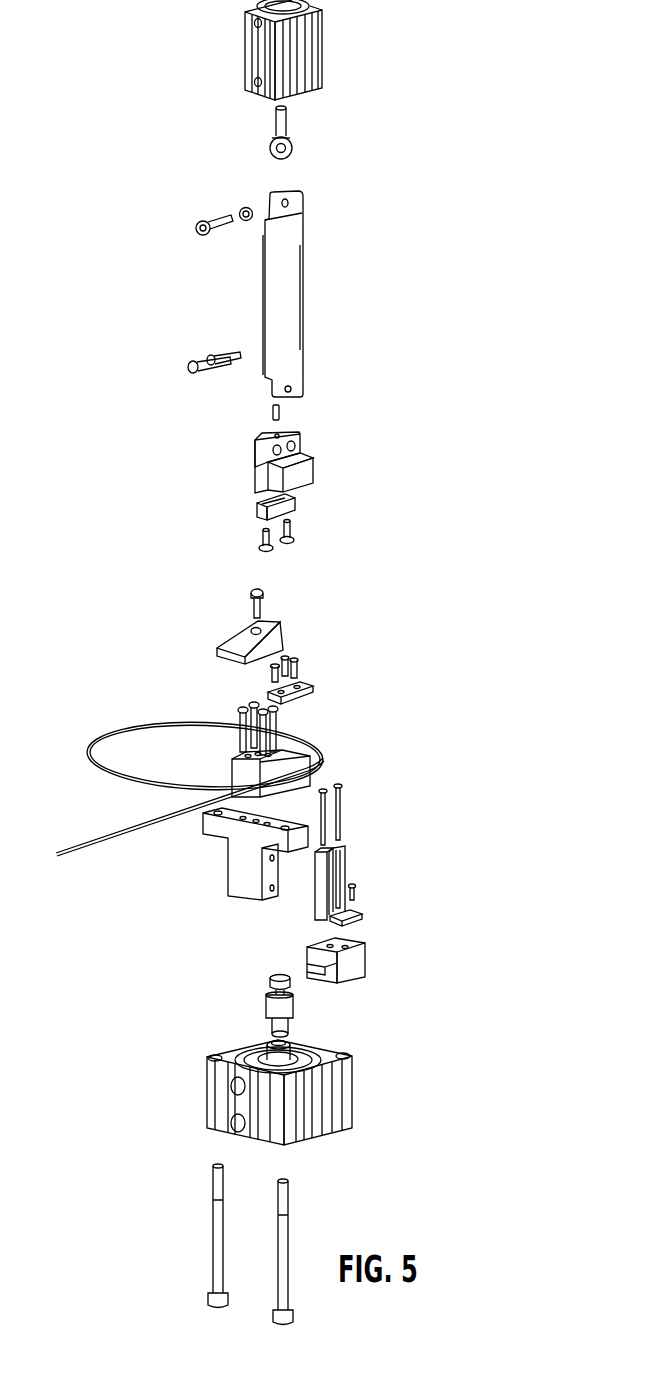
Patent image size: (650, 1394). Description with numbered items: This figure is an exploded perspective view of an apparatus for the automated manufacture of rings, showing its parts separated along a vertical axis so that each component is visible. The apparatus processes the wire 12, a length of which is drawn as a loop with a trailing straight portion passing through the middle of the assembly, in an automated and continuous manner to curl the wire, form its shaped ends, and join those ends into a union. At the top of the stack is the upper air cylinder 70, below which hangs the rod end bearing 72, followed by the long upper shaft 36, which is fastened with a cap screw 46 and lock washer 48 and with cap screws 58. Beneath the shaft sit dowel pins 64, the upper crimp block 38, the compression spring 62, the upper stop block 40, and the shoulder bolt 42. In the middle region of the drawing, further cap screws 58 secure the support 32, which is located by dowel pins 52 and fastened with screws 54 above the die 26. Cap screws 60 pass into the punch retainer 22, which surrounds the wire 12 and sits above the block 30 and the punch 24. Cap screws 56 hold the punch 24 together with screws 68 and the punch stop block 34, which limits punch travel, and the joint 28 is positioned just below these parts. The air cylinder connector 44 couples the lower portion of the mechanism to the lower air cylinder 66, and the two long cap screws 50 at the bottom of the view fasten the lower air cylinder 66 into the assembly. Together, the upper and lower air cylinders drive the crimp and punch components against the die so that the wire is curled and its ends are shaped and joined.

The wire 12 is at (88, 752).
The punch retainer 22 is at (305, 756).
The punch 24 is at (314, 902).
The die 26 is at (316, 692).
The joint 28 is at (366, 962).
The block 30 is at (228, 862).
The support 32 is at (284, 624).
The punch stop block 34 is at (360, 918).
The upper shaft 36 is at (303, 250).
The upper crimp block 38 is at (301, 450).
The upper stop block 40 is at (256, 508).
The shoulder bolt 42 is at (294, 540).
The air cylinder connector 44 is at (269, 984).
The cap screw 46 is at (197, 226).
The lock washer 48 is at (241, 208).
The cap screws 50 is at (277, 1284).
The dowel pins 52 is at (300, 663).
The screws 54 is at (272, 677).
The cap screws 56 is at (332, 816).
The cap screws 58 is at (198, 362).
The cap screws 60 is at (238, 714).
The compression spring 62 is at (264, 500).
The dowel pins 64 is at (272, 412).
The lower air cylinder 66 is at (355, 1068).
The screws 68 is at (356, 888).
The upper air cylinder 70 is at (243, 48).
The rod end bearing 72 is at (291, 143).